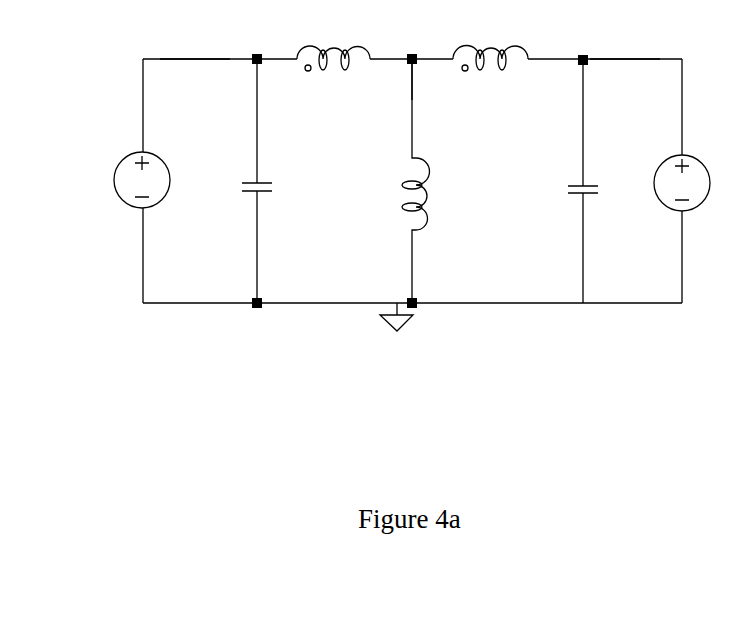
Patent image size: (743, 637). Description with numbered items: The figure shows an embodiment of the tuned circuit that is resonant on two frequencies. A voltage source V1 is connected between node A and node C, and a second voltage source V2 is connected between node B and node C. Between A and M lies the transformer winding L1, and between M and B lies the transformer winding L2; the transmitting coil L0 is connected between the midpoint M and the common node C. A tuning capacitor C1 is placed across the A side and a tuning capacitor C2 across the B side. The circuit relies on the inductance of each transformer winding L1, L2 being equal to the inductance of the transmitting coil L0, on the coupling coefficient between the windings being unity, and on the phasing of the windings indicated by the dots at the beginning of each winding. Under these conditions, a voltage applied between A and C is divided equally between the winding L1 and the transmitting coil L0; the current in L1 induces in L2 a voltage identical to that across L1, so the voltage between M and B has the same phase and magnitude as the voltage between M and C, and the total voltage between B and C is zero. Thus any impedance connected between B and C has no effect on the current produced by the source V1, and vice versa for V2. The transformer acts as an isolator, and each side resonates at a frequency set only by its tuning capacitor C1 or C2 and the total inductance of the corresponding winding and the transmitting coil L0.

The node A is at (195, 51).
The node B is at (625, 52).
The node M is at (414, 71).
The node C is at (396, 307).
The voltage source V1 is at (154, 181).
The voltage source V2 is at (694, 181).
The tuning capacitor C1 is at (245, 181).
The tuning capacitor C2 is at (572, 181).
The transformer winding L1 is at (333, 47).
The transformer winding L2 is at (490, 47).
The transmitting coil L0 is at (430, 181).